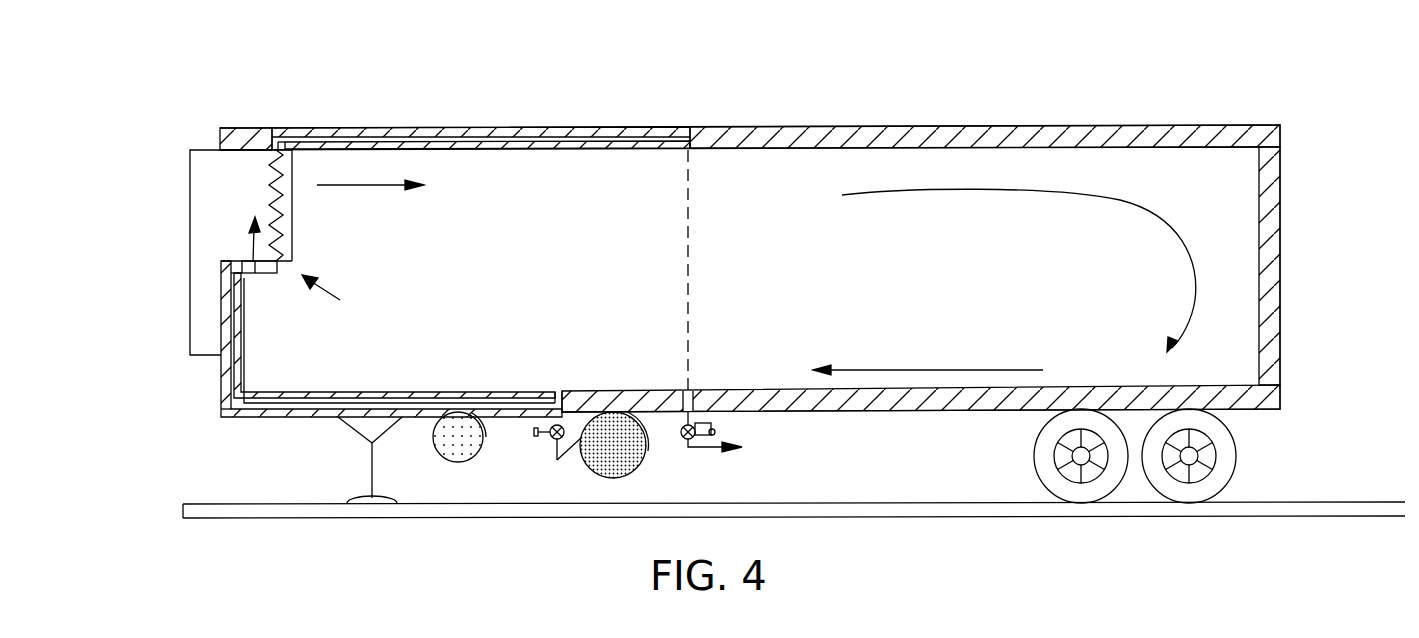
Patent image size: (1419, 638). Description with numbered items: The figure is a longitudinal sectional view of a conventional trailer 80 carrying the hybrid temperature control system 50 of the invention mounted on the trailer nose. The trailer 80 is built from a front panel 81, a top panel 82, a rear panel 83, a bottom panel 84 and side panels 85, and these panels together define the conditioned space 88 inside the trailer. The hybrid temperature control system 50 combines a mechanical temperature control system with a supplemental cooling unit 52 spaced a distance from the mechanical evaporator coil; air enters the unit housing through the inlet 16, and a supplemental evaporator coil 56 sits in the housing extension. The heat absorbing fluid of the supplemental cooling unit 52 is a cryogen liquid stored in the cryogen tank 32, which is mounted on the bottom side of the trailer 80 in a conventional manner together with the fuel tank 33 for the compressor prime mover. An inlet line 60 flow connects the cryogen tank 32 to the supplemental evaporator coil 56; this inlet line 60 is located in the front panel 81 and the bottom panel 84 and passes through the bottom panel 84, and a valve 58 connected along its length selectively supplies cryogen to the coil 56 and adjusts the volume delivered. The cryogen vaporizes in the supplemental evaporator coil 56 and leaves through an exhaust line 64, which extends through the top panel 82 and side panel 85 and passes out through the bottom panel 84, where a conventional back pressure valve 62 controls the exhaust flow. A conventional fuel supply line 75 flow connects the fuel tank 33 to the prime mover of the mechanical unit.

The trailer 80 is at (1216, 96).
The side panel 85 is at (807, 166).
The rear panel 83 is at (1272, 236).
The bottom panel 84 is at (845, 403).
The exhaust line 64 is at (300, 142).
The top panel 82 is at (689, 127).
The hybrid temperature control system 50 is at (158, 205).
The supplemental evaporator coil 56 is at (271, 196).
The inlet 16 is at (253, 262).
The front panel 81 is at (226, 300).
The fuel supply line 75 is at (221, 395).
The inlet line 60 is at (257, 275).
The supplemental cooling unit 52 is at (337, 298).
The conditioned space 88 is at (495, 312).
The fuel tank 33 is at (444, 456).
The valve 58 is at (550, 443).
The cryogen tank 32 is at (650, 472).
The back pressure valve 62 is at (717, 432).